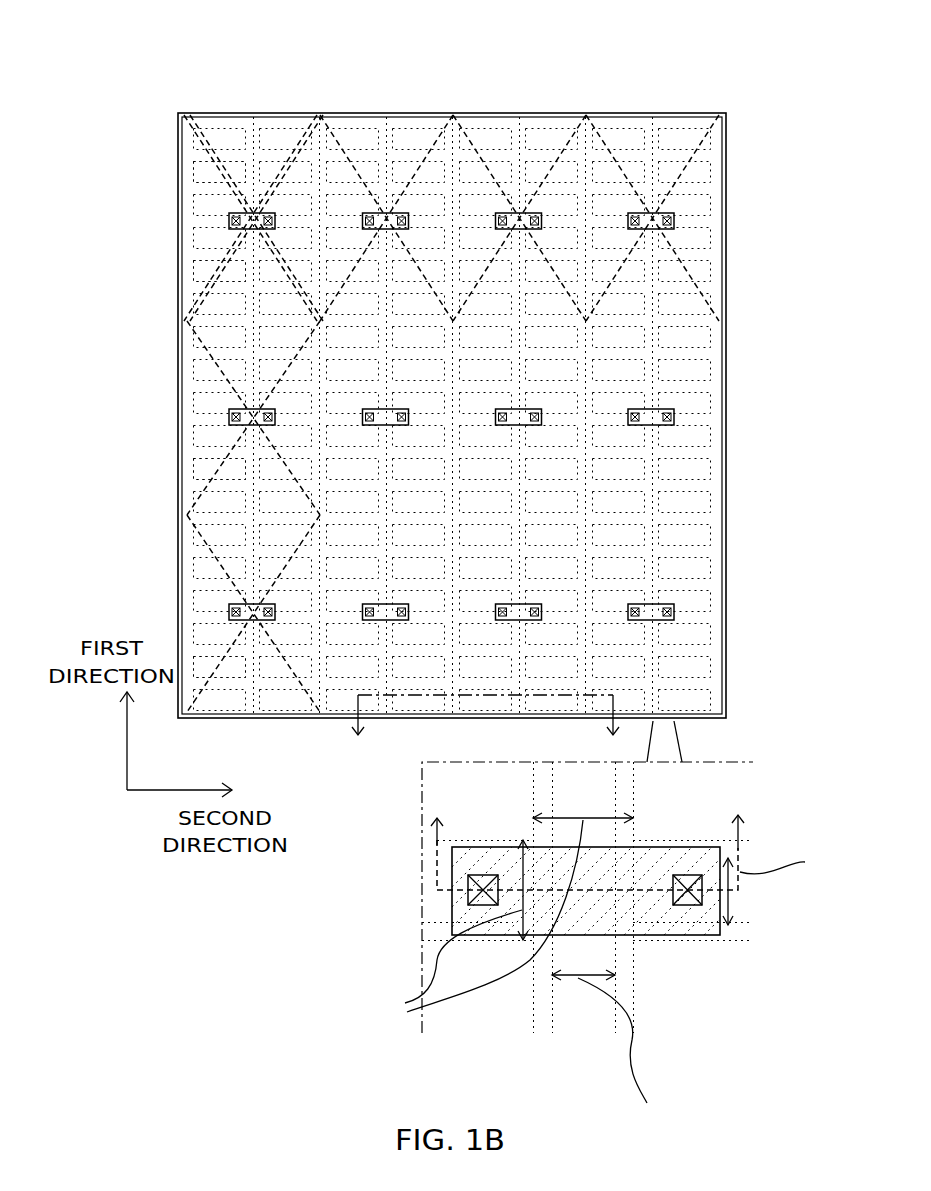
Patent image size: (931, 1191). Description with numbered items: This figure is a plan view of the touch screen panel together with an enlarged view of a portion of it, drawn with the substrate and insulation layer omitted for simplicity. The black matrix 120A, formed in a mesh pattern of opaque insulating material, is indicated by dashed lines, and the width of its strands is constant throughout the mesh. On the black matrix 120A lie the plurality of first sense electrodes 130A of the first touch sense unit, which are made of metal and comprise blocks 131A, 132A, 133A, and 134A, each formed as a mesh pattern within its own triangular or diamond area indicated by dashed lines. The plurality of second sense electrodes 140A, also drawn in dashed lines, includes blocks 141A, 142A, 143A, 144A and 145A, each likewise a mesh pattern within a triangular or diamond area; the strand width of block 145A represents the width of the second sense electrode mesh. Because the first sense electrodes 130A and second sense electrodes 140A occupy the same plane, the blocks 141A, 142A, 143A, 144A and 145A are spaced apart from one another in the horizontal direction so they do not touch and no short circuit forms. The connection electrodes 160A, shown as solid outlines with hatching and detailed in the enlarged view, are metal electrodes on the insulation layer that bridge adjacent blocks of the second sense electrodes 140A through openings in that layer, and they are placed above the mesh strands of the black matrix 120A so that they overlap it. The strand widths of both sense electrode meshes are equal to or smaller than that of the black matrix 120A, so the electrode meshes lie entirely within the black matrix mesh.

The black matrix 120A is at (728, 118).
The plurality of first sense electrodes 130A is at (72, 232).
The block 131A is at (247, 170).
The block 132A is at (248, 268).
The block 133A is at (248, 467).
The block 134A is at (248, 660).
The plurality of second sense electrodes 140A is at (613, 45).
The block 141A is at (205, 152).
The block 142A is at (333, 153).
The block 143A is at (428, 132).
The block 144A is at (563, 158).
The block 145A is at (705, 160).
The connection electrodes 160A is at (675, 214).